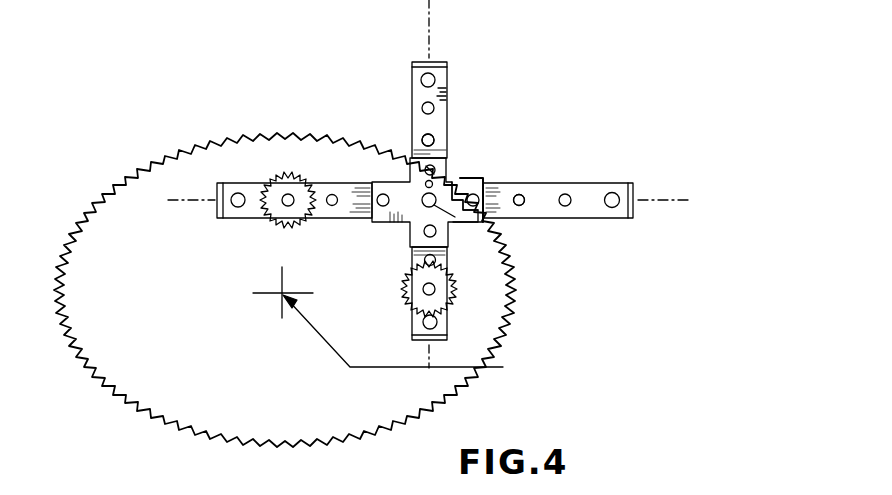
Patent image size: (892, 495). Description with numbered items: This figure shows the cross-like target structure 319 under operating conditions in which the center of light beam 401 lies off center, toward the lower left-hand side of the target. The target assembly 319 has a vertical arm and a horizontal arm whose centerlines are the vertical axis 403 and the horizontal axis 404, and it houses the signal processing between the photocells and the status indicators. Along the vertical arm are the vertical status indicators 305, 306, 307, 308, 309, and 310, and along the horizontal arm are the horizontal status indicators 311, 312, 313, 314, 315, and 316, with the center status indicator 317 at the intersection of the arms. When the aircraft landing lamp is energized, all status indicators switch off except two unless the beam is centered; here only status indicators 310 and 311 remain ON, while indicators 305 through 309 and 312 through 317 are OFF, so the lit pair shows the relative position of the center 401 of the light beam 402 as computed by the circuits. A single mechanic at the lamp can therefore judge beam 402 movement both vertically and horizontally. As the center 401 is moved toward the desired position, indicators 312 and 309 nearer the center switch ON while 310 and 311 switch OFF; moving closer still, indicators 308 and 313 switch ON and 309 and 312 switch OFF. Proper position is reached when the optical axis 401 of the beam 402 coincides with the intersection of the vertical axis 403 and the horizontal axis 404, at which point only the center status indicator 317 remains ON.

The vertical status indicator 305 is at (432, 104).
The vertical status indicator 306 is at (440, 136).
The vertical status indicator 307 is at (452, 160).
The vertical status indicator 308 is at (424, 234).
The vertical status indicator 309 is at (425, 261).
The vertical status indicator 310 is at (423, 290).
The horizontal status indicator 311 is at (275, 220).
The horizontal status indicator 312 is at (330, 206).
The horizontal status indicator 313 is at (384, 193).
The horizontal status indicator 314 is at (475, 194).
The horizontal status indicator 315 is at (519, 194).
The horizontal status indicator 316 is at (566, 194).
The center status indicator 317 is at (455, 223).
The cross-like target structure 319 is at (373, 118).
The center of light beam 401 is at (272, 298).
The light beam 402 is at (122, 403).
The vertical axis 403 is at (430, 32).
The horizontal axis 404 is at (651, 203).